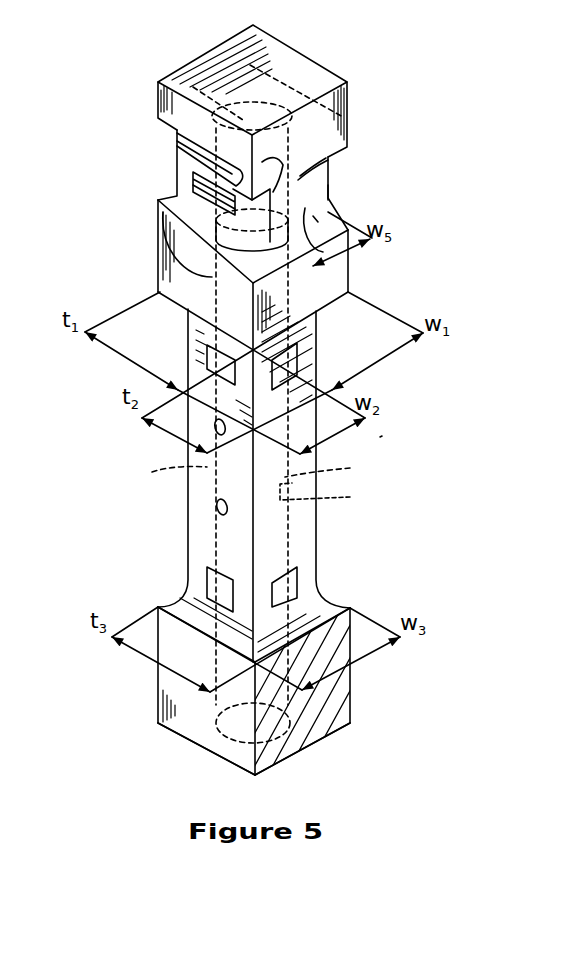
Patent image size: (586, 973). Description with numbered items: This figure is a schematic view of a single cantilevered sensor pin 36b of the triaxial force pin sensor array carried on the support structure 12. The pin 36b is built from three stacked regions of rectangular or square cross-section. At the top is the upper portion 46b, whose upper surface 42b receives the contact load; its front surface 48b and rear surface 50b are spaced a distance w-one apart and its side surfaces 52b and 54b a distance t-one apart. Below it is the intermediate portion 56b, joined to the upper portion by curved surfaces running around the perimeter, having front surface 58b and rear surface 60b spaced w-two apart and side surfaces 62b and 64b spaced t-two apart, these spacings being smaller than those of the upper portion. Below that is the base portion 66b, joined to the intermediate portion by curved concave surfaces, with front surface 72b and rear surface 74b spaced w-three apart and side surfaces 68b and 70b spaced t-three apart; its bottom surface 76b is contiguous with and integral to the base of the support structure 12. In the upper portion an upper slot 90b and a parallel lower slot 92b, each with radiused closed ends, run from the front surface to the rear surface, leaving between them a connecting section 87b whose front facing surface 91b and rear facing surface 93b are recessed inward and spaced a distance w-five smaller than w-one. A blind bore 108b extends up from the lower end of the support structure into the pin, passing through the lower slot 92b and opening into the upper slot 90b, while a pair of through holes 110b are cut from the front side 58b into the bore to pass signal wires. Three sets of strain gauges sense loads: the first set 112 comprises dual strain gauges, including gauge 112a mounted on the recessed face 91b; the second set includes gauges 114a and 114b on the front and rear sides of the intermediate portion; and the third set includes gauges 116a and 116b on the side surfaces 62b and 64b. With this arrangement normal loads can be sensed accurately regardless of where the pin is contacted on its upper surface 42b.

The support structure 12 is at (195, 722).
The pin 36b is at (383, 436).
The upper surface 42b is at (247, 80).
The upper portion 46b is at (396, 212).
The front surface 48b is at (200, 274).
The rear surface 50b is at (349, 268).
The side surface 52b is at (312, 289).
The side surface 54b is at (157, 270).
The intermediate portion 56b is at (348, 517).
The front surface 58b is at (197, 540).
The rear surface 60b is at (339, 465).
The side surface 62b is at (303, 552).
The side surface 64b is at (157, 468).
The base portion 66b is at (433, 746).
The side surface 68b is at (312, 714).
The side surface 70b is at (158, 677).
The front surface 72b is at (190, 695).
The rear surface 74b is at (352, 677).
The bottom surface 76b is at (212, 748).
The connecting section 87b is at (298, 178).
The upper slot 90b is at (188, 162).
The front facing surface 91b is at (188, 165).
The lower slot 92b is at (313, 216).
The rear facing surface 93b is at (328, 191).
The blind bore 108b is at (344, 490).
The through hole 110b is at (215, 430).
The first set of strain gauges 112 is at (187, 177).
The dual strain gauge 112a is at (180, 197).
The strain gauge 114a is at (206, 357).
The strain gauge 114b is at (207, 585).
The strain gauge 116a is at (292, 362).
The strain gauge 116b is at (298, 581).